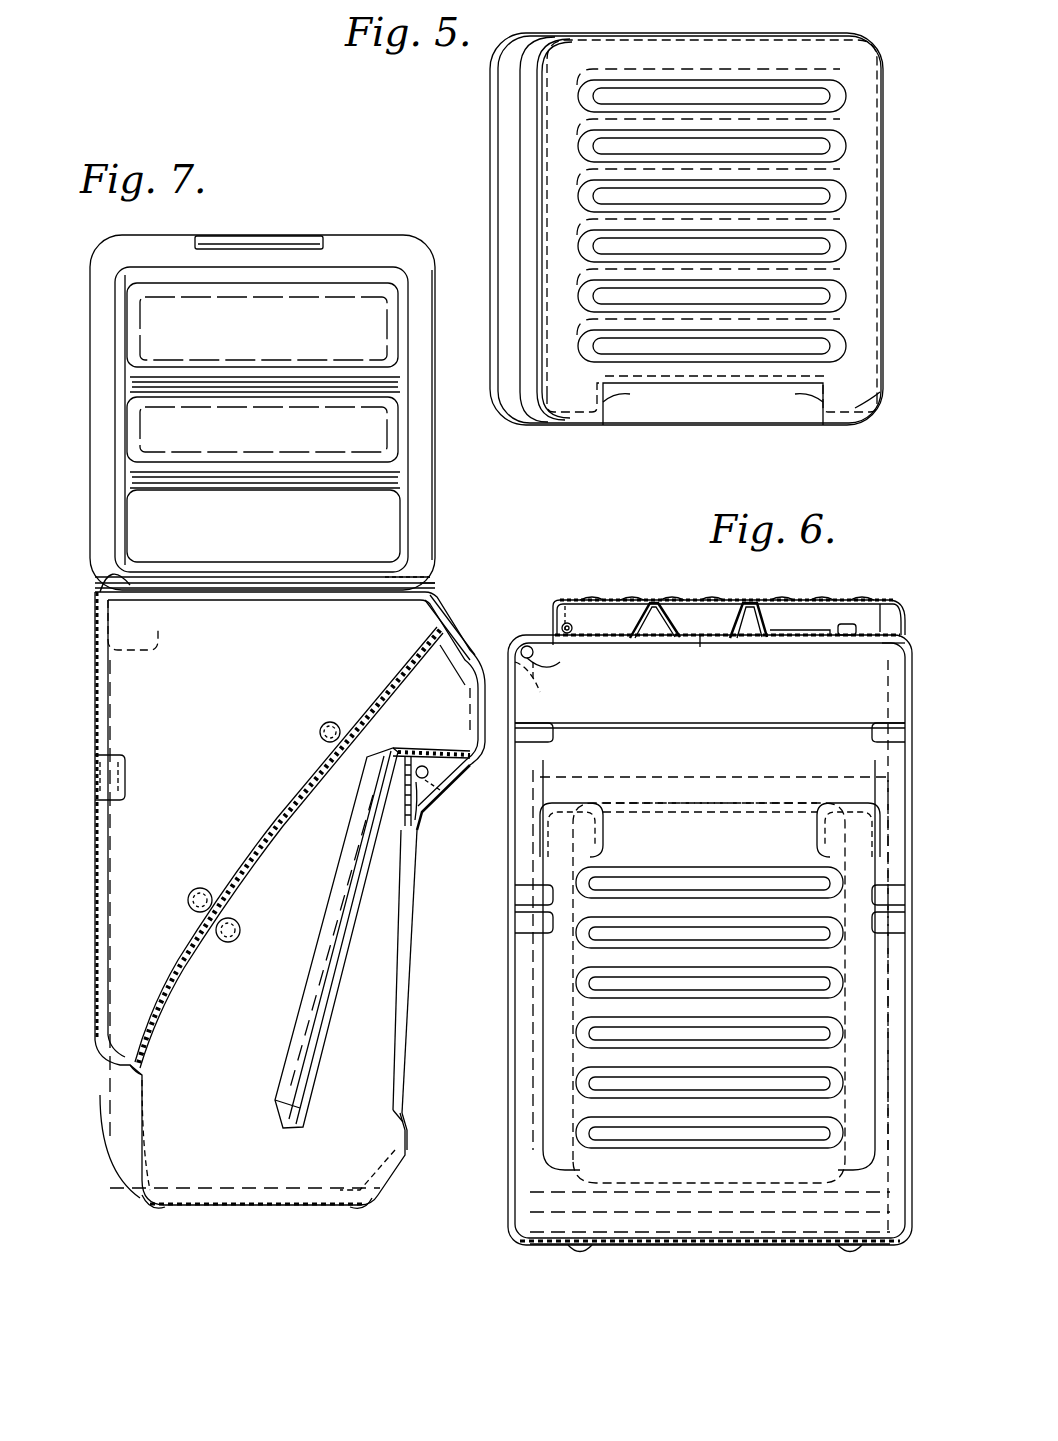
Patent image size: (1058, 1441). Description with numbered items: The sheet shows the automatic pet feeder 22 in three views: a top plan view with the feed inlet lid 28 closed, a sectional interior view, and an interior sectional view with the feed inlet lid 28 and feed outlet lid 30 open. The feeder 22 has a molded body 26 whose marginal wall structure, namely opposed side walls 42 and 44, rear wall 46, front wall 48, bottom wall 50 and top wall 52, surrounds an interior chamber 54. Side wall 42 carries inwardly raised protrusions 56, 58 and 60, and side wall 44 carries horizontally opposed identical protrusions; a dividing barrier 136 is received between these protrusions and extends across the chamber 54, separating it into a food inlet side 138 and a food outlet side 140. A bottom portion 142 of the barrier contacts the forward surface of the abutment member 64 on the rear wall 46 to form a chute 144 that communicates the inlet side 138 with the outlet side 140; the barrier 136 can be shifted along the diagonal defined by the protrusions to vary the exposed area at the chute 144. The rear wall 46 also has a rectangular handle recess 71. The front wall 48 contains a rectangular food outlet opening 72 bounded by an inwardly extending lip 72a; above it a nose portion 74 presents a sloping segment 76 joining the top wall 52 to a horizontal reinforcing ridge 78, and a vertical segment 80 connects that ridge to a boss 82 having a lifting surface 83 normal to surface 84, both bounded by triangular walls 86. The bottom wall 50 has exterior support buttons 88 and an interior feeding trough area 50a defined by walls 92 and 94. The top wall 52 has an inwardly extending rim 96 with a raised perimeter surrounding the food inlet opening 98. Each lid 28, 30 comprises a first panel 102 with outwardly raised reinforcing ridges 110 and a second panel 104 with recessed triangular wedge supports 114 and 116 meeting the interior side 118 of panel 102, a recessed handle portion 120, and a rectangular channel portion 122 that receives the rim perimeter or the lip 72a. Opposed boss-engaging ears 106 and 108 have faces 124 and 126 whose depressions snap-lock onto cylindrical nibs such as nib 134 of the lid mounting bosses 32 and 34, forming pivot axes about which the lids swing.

In FIG. 5, the automatic pet feeder 22 is at (462, 158).
In FIG. 6, the automatic pet feeder 22 is at (510, 980).
In FIG. 7, the automatic pet feeder 22 is at (410, 990).
In FIG. 5, the molded body 26 is at (512, 393).
In FIG. 6, the molded body 26 is at (520, 1222).
In FIG. 7, the molded body 26 is at (455, 660).
In FIG. 5, the feed inlet lid 28 is at (680, 52).
In FIG. 6, the feed inlet lid 28 is at (705, 598).
In FIG. 7, the feed inlet lid 28 is at (450, 583).
In FIG. 6, the feed outlet lid 30 is at (703, 868).
In FIG. 7, the feed outlet lid 30 is at (312, 1075).
In FIG. 6, the lid mounting boss 32 is at (795, 840).
In FIG. 6, the lid mounting boss 34 is at (600, 840).
In FIG. 7, the lid mounting boss 34 is at (428, 782).
In FIG. 6, the side wall 42 is at (545, 1092).
In FIG. 7, the side wall 42 is at (120, 883).
In FIG. 6, the side wall 44 is at (908, 1112).
In FIG. 7, the rear wall 46 is at (95, 1022).
In FIG. 7, the front wall 48 is at (418, 920).
In FIG. 6, the bottom wall 50 is at (720, 1248).
In FIG. 7, the bottom wall 50 is at (275, 1208).
In FIG. 7, the feeding trough area 50a is at (215, 1133).
In FIG. 6, the top wall 52 is at (560, 630).
In FIG. 7, the top wall 52 is at (110, 592).
In FIG. 7, the interior chamber 54 is at (80, 960).
In FIG. 6, the raised protrusion 56 is at (540, 735).
In FIG. 7, the raised protrusion 56 is at (336, 722).
In FIG. 6, the raised protrusion 58 is at (898, 928).
In FIG. 7, the raised protrusion 58 is at (200, 888).
In FIG. 6, the raised protrusion 60 is at (898, 888).
In FIG. 7, the raised protrusion 60 is at (240, 930).
In FIG. 7, the abutment member 64 is at (140, 1100).
In FIG. 7, the handle recess 71 is at (125, 762).
In FIG. 7, the food outlet opening 72 is at (442, 1008).
In FIG. 7, the lip 72a is at (398, 1118).
In FIG. 7, the nose portion 74 is at (485, 658).
In FIG. 7, the sloping segment 76 is at (440, 615).
In FIG. 7, the reinforcing ridge 78 is at (475, 672).
In FIG. 7, the vertical segment 80 is at (482, 720).
In FIG. 6, the boss 82 is at (653, 800).
In FIG. 7, the boss 82 is at (470, 760).
In FIG. 7, the lifting surface 83 is at (432, 772).
In FIG. 6, the surface 84 is at (640, 832).
In FIG. 7, the surface 84 is at (285, 785).
In FIG. 6, the triangular wall 86 is at (605, 805).
In FIG. 7, the triangular wall 86 is at (418, 810).
In FIG. 6, the support button 88 is at (582, 1252).
In FIG. 7, the support button 88 is at (148, 1208).
In FIG. 7, the wall 92 is at (145, 1135).
In FIG. 6, the wall 94 is at (520, 1190).
In FIG. 6, the rim 96 is at (888, 642).
In FIG. 7, the rim 96 is at (150, 588).
In FIG. 6, the food inlet opening 98 is at (745, 655).
In FIG. 7, the food inlet opening 98 is at (282, 622).
In FIG. 6, the first panel 102 is at (800, 598).
In FIG. 6, the second panel 104 is at (800, 642).
In FIG. 7, the second panel 104 is at (365, 328).
In FIG. 5, the boss-engaging ear 106 is at (582, 405).
In FIG. 6, the boss-engaging ear 106 is at (528, 638).
In FIG. 7, the boss-engaging ear 106 is at (110, 598).
In FIG. 5, the boss-engaging ear 108 is at (855, 408).
In FIG. 7, the boss-engaging ear 108 is at (430, 586).
In FIG. 5, the reinforcing ridge 110 is at (822, 345).
In FIG. 6, the reinforcing ridge 110 is at (610, 627).
In FIG. 6, the wedge support 114 is at (660, 612).
In FIG. 7, the wedge support 114 is at (392, 478).
In FIG. 6, the wedge support 116 is at (760, 612).
In FIG. 7, the wedge support 116 is at (392, 382).
In FIG. 6, the interior side 118 is at (840, 635).
In FIG. 7, the handle portion 120 is at (232, 236).
In FIG. 6, the channel portion 122 is at (895, 620).
In FIG. 7, the channel portion 122 is at (340, 268).
In FIG. 5, the face 124 is at (603, 402).
In FIG. 5, the face 126 is at (823, 402).
In FIG. 6, the nib 134 is at (535, 660).
In FIG. 7, the dividing barrier 136 is at (300, 773).
In FIG. 7, the food inlet side 138 is at (180, 690).
In FIG. 7, the food outlet side 140 is at (170, 1085).
In FIG. 7, the bottom portion 142 is at (145, 1058).
In FIG. 7, the chute 144 is at (125, 1035).